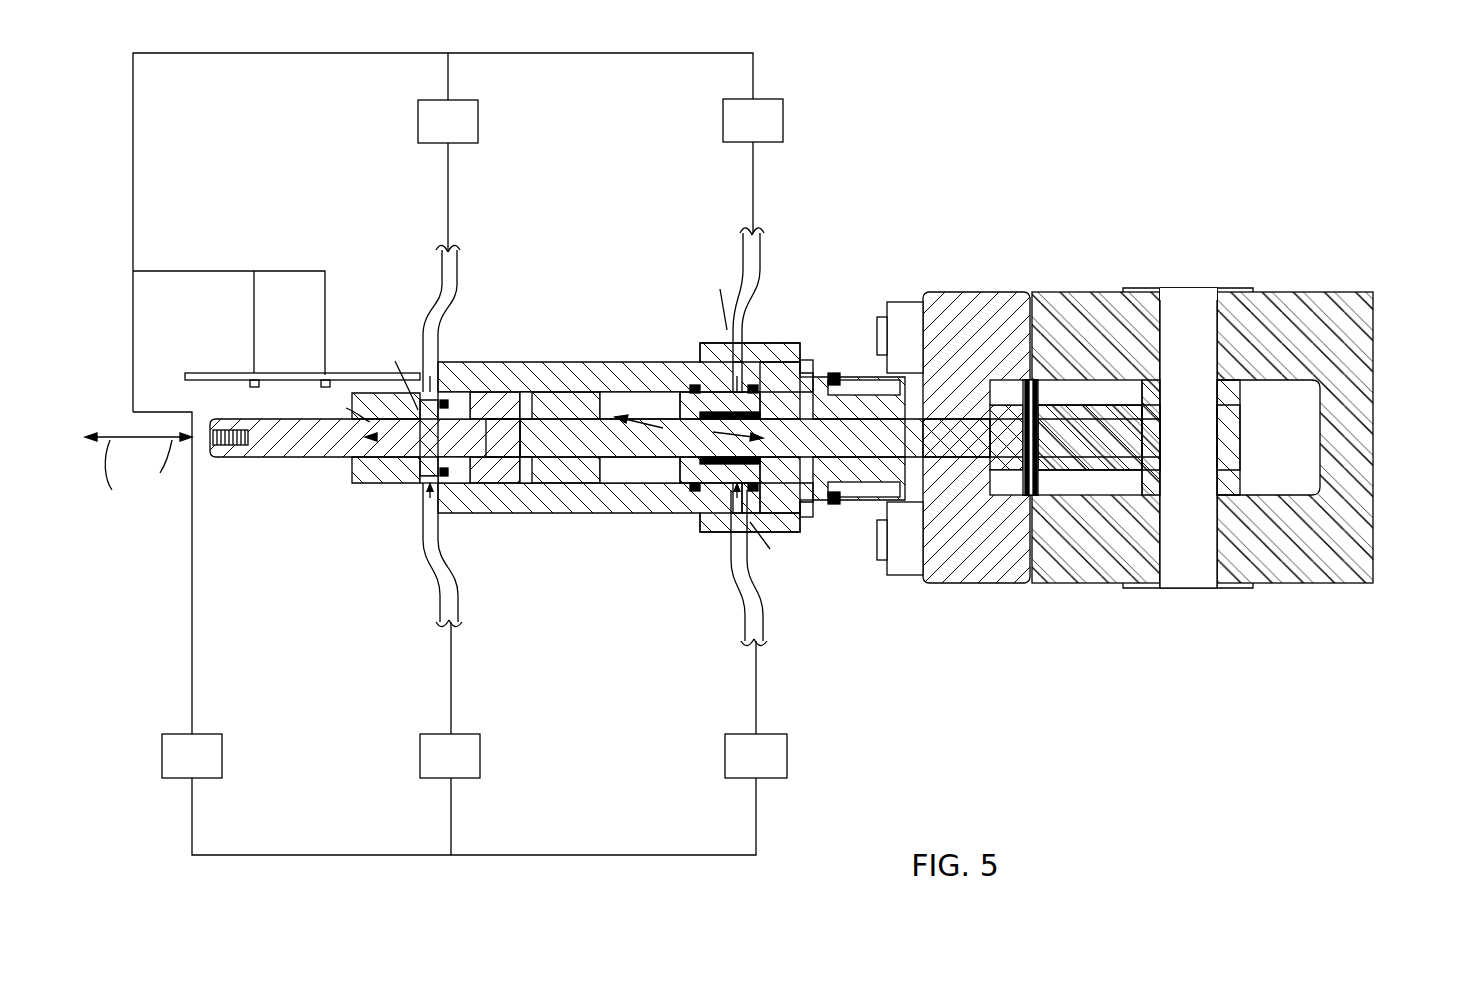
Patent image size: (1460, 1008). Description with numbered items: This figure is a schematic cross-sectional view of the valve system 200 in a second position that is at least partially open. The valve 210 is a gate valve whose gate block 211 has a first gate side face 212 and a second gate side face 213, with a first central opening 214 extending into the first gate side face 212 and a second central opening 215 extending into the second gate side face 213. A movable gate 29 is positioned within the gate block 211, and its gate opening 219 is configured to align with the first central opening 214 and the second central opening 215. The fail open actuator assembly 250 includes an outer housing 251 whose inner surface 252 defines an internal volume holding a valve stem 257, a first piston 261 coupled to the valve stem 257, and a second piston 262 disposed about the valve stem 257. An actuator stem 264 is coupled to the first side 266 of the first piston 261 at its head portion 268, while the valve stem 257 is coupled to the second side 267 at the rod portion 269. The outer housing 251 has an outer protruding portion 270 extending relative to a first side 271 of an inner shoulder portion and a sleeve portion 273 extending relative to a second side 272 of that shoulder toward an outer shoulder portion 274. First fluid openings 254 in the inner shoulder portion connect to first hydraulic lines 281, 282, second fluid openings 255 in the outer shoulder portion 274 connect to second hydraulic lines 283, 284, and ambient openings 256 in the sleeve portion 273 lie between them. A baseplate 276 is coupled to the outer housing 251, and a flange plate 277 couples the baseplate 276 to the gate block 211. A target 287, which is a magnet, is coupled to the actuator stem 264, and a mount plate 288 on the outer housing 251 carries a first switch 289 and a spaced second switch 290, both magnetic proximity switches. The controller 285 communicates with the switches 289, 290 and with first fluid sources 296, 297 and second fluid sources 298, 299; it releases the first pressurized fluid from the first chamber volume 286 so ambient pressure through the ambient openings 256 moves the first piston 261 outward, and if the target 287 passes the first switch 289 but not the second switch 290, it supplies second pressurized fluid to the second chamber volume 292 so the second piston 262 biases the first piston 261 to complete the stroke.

The valve system 200 is at (771, 454).
The valve 210 is at (1220, 436).
The gate block 211 is at (1095, 553).
The first gate side face 212 is at (1331, 475).
The second gate side face 213 is at (1348, 292).
The first central opening 214 is at (1185, 572).
The second central opening 215 is at (1170, 302).
The gate opening 219 is at (1205, 440).
The movable gate 29 is at (1140, 442).
The fail open actuator assembly 250 is at (753, 418).
The outer housing 251 is at (665, 362).
The inner surface 252 is at (517, 362).
The first fluid openings 254 is at (412, 370).
The second fluid openings 255 is at (722, 362).
The ambient openings 256 is at (595, 362).
The valve stem 257 is at (875, 437).
The first piston 261 is at (533, 484).
The second piston 262 is at (650, 495).
The actuator stem 264 is at (596, 420).
The first side 266 is at (430, 400).
The second side 267 is at (689, 429).
The head portion 268 is at (570, 362).
The rod portion 269 is at (620, 362).
The outer protruding portion 270 is at (355, 474).
The first side 271 is at (400, 506).
The second side 272 is at (505, 468).
The sleeve portion 273 is at (555, 484).
The outer shoulder portion 274 is at (735, 505).
The baseplate 276 is at (815, 376).
The flange plate 277 is at (963, 292).
The first hydraulic line 281 is at (440, 584).
The first hydraulic line 282 is at (438, 260).
The second hydraulic line 283 is at (775, 618).
The second hydraulic line 284 is at (760, 242).
The controller 285 is at (177, 768).
The first chamber volume 286 is at (450, 362).
The target 287 is at (238, 446).
The mount plate 288 is at (215, 373).
The first switch 289 is at (325, 373).
The second switch 290 is at (252, 386).
The second chamber volume 292 is at (800, 360).
The first fluid source 296 is at (436, 768).
The first fluid source 297 is at (433, 133).
The second fluid source 298 is at (741, 768).
The second fluid source 299 is at (738, 132).